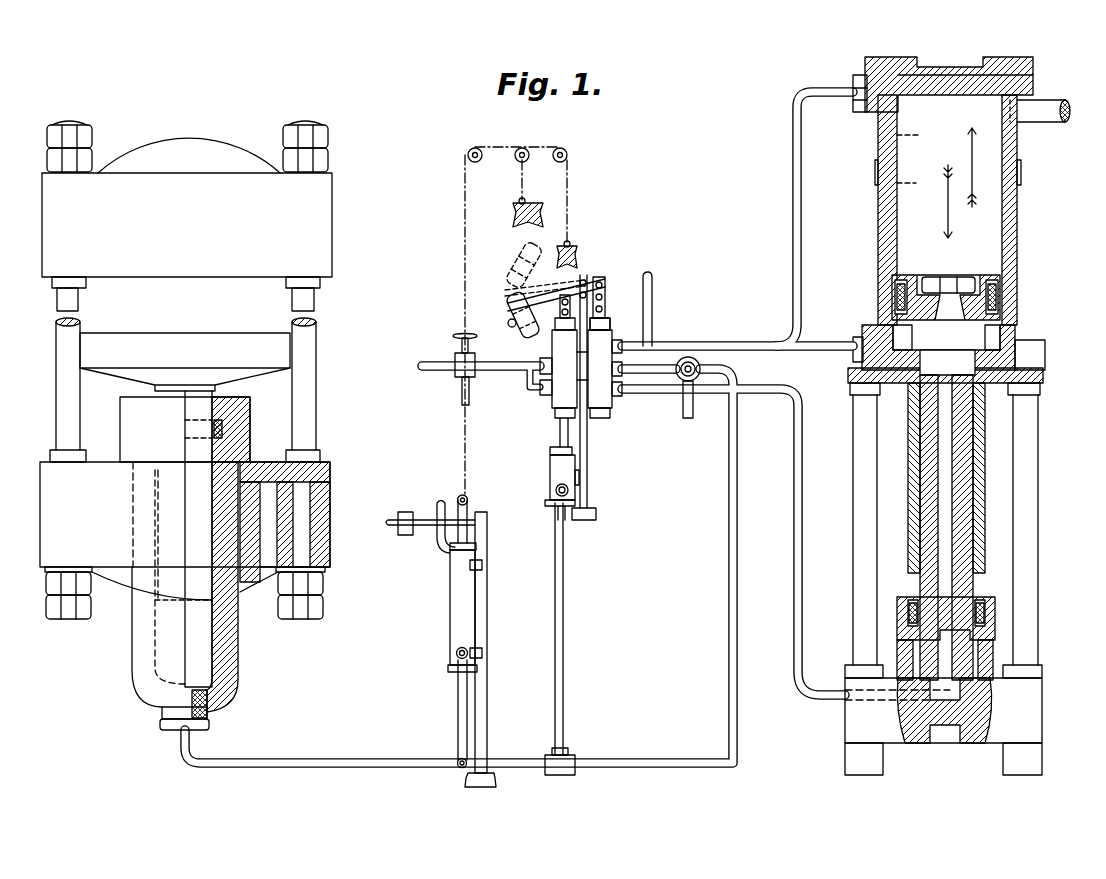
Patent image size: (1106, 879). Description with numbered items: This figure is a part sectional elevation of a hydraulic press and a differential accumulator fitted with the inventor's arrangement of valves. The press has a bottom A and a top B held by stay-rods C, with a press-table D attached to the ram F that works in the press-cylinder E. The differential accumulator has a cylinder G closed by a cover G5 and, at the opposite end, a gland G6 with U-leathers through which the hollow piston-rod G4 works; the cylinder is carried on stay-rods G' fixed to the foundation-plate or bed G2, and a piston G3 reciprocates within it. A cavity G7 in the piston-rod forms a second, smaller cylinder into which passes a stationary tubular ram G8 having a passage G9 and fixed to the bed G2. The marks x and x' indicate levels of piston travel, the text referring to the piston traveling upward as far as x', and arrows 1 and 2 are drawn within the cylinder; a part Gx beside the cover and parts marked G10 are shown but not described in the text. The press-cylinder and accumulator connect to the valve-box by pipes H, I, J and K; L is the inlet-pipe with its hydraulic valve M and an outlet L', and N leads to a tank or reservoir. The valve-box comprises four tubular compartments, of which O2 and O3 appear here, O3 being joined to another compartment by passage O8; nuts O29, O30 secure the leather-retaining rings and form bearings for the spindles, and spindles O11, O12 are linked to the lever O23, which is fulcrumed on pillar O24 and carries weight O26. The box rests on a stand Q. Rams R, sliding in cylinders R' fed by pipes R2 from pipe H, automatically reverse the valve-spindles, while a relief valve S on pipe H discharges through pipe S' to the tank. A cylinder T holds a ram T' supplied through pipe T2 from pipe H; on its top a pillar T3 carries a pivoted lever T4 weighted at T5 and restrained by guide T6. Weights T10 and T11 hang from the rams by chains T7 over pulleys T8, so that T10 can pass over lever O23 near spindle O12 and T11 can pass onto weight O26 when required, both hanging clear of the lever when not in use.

The press bottom A is at (185, 540).
The press top B is at (187, 216).
The stay-rods C is at (185, 390).
The press-table D is at (185, 362).
The press-cylinder E is at (247, 642).
The ram F is at (183, 539).
The pipe H is at (246, 750).
The pipe I is at (800, 490).
The pipe J is at (802, 182).
The pipe K is at (822, 350).
The inlet-pipe L is at (481, 381).
The outlet L' is at (450, 391).
The hydraulic valve M is at (452, 356).
The pipe N is at (653, 295).
The stand Q is at (580, 460).
The rams R is at (550, 436).
The cylinders R' is at (551, 487).
The pipes R2 is at (555, 570).
The hydraulic valve S is at (692, 347).
The pipe S' is at (675, 402).
The cylinder T is at (448, 611).
The ram T' is at (458, 628).
The pipe T2 is at (455, 768).
The pillar T3 is at (489, 556).
The lever T4 is at (425, 516).
The weight T5 is at (398, 532).
The guide T6 is at (437, 530).
The chains T7 is at (578, 200).
The pulleys T8 is at (480, 152).
The weight T10 is at (577, 255).
The weight T11 is at (515, 205).
The compartment O2 is at (605, 363).
The compartment O3 is at (570, 368).
The passage O8 is at (537, 392).
The spindle O11 is at (612, 312).
The spindle O12 is at (556, 296).
The lever O23 is at (510, 322).
The pillar O24 is at (590, 295).
The weight O26 is at (515, 295).
The nut O29 is at (604, 324).
The nut O30 is at (615, 413).
The accumulator cylinder G is at (972, 210).
The stay-rods G' is at (943, 530).
The foundation-plate G2 is at (943, 726).
The piston G3 is at (930, 268).
The hollow piston-rod G4 is at (985, 473).
The cover G5 is at (932, 62).
The gland G6 is at (897, 395).
The cavity G7 is at (946, 354).
The stationary tubular ram G8 is at (920, 473).
The passage G9 is at (946, 527).
The packing G10 is at (1030, 312).
The bolt Gx is at (858, 78).
The level x is at (915, 132).
The piston travel position x' is at (915, 184).
The direction arrow 1 is at (975, 167).
The direction arrow 2 is at (944, 201).